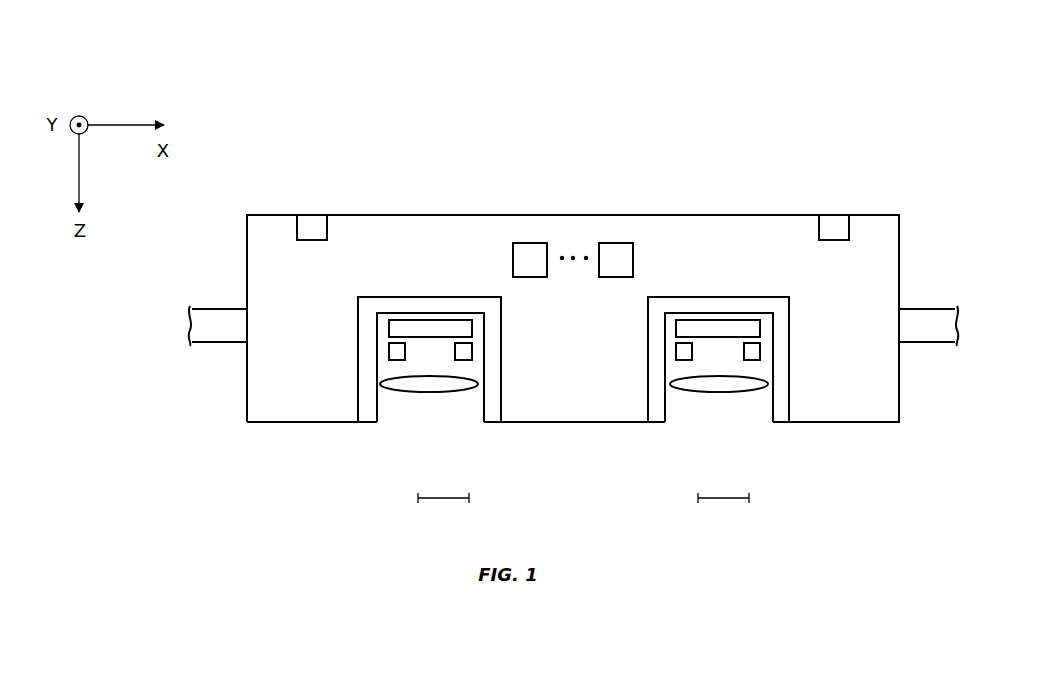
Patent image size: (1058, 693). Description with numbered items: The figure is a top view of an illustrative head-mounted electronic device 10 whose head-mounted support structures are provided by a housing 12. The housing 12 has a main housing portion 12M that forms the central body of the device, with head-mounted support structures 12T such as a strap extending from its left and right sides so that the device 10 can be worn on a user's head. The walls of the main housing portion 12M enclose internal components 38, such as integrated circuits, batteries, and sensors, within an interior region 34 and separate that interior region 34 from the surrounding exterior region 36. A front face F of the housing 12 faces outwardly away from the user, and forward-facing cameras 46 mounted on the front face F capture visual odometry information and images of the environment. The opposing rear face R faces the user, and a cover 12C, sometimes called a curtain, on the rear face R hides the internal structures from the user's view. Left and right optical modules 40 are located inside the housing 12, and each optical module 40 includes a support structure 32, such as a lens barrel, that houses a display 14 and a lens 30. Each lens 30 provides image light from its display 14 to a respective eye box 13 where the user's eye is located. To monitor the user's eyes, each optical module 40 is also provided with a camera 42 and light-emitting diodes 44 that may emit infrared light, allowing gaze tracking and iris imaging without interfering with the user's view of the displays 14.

The electronic device 10 is at (859, 77).
The housing 12 is at (645, 222).
The main housing portion 12M is at (276, 212).
The cover 12C is at (267, 425).
The head-mounted support structures 12T is at (219, 328).
The eye boxes 13 is at (470, 499).
The display 14 is at (453, 330).
The lens 30 is at (678, 383).
The support structure 32 is at (379, 307).
The interior region 34 is at (862, 264).
The exterior region 36 is at (442, 183).
The internal components 38 is at (617, 254).
The optical modules 40 is at (353, 410).
The camera 42 is at (681, 351).
The light-emitting diodes 44 is at (392, 352).
The cameras 46 is at (312, 222).
The front face F is at (706, 195).
The rear face R is at (854, 450).